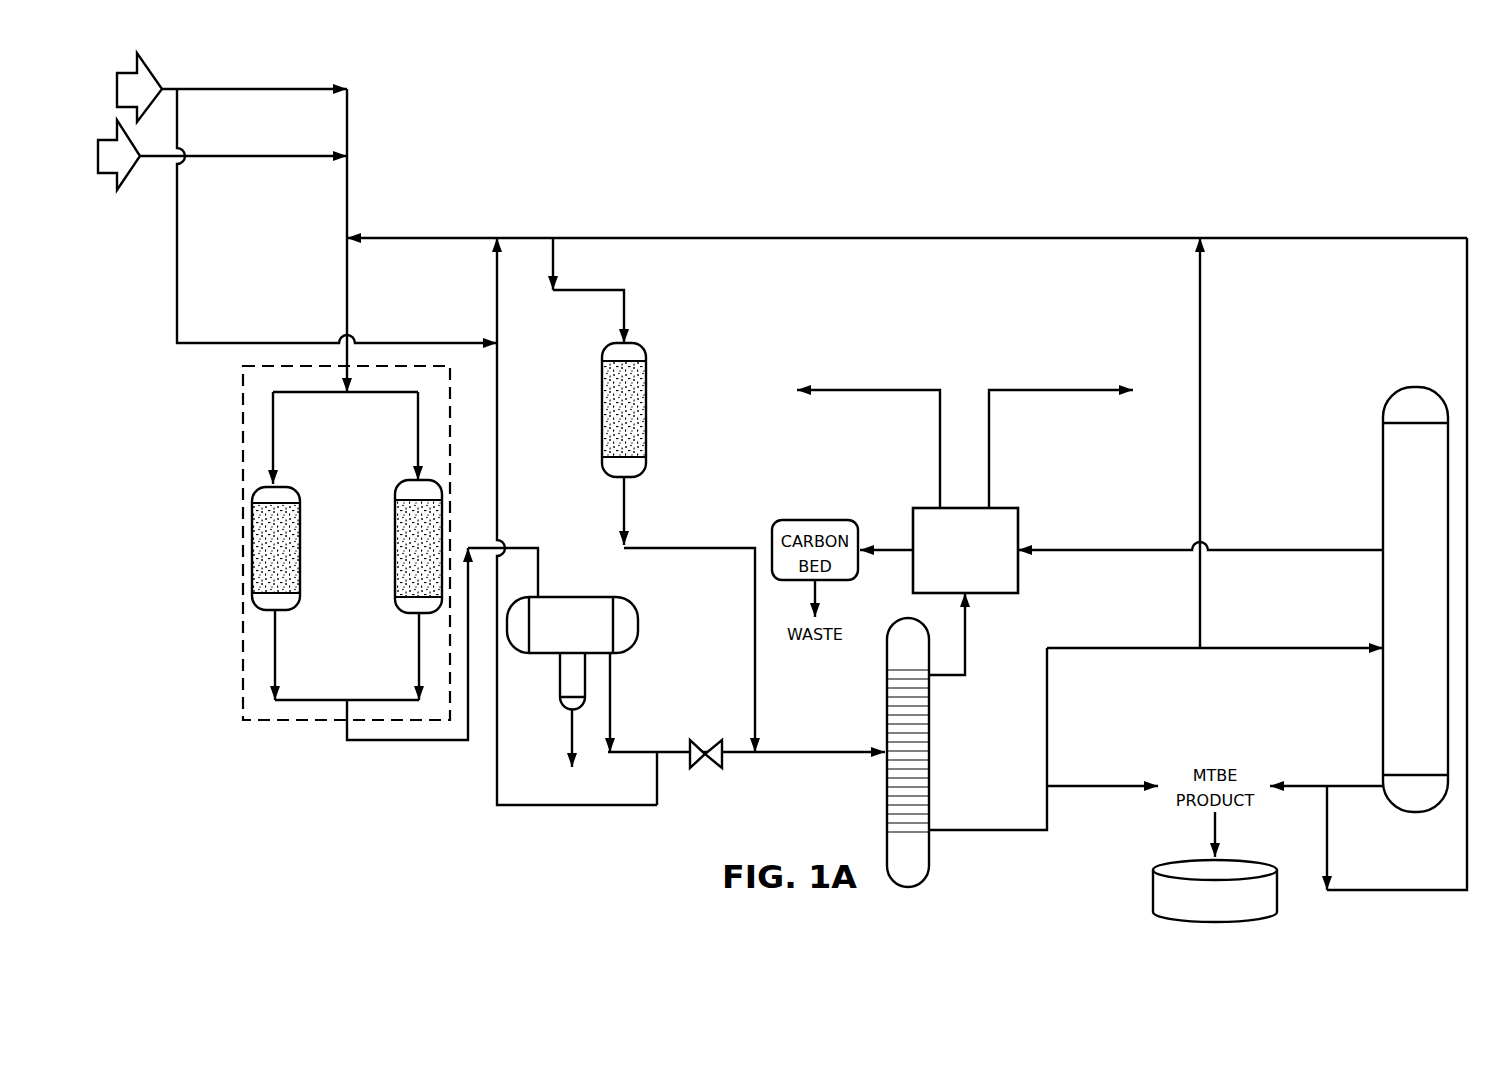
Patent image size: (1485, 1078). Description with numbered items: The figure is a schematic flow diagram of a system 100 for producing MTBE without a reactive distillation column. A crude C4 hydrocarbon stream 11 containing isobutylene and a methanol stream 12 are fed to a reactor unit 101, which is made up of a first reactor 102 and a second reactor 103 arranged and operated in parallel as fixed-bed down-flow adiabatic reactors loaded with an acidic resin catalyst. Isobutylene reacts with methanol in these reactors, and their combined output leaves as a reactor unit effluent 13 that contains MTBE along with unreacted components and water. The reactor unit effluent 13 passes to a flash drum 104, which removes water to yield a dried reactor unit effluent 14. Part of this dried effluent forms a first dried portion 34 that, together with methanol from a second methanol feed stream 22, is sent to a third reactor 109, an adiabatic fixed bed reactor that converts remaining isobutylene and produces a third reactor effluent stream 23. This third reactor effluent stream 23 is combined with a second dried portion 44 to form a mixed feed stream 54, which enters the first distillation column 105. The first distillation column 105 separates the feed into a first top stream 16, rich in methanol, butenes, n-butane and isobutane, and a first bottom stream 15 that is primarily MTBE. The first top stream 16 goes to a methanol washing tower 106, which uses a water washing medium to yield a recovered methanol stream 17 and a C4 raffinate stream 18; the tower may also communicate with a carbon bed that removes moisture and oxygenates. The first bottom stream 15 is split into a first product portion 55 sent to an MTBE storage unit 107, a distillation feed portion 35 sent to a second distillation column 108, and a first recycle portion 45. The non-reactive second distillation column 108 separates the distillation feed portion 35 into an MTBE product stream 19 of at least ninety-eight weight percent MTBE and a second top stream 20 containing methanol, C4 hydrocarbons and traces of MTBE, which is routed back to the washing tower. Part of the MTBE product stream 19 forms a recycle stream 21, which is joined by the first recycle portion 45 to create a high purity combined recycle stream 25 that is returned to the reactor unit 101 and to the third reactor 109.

The system 100 is at (1300, 98).
The methanol stream 12 is at (200, 88).
The crude C4 hydrocarbon stream 11 is at (253, 157).
The second methanol feed stream 22 is at (178, 250).
The combined recycle stream 25 is at (1068, 237).
The recycle stream 21 is at (1335, 237).
The reactor unit 101 is at (288, 404).
The first reactor 102 is at (300, 520).
The second reactor 103 is at (395, 567).
The reactor unit effluent 13 is at (404, 742).
The first dried portion 34 is at (576, 807).
The second dried portion 44 is at (672, 756).
The third reactor 109 is at (646, 383).
The third reactor effluent stream 23 is at (625, 508).
The flash drum 104 is at (582, 596).
The dried reactor unit effluent 14 is at (611, 688).
The mixed feed stream 54 is at (820, 756).
The first distillation column 105 is at (930, 706).
The first top stream 16 is at (966, 630).
The first bottom stream 15 is at (990, 832).
The distillation feed portion 35 is at (1250, 650).
The first product portion 55 is at (1070, 785).
The methanol washing tower 106 is at (1019, 525).
The recovered methanol stream 17 is at (855, 392).
The C4 raffinate stream 18 is at (1033, 392).
The second top stream 20 is at (1090, 552).
The first recycle portion 45 is at (1201, 408).
The second distillation column 108 is at (1383, 475).
The MTBE product stream 19 is at (1364, 785).
The MTBE storage unit 107 is at (1153, 890).